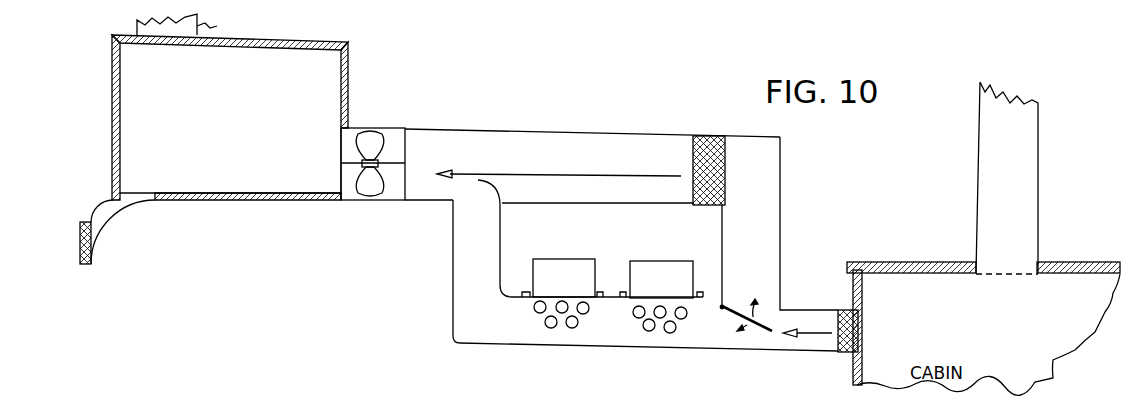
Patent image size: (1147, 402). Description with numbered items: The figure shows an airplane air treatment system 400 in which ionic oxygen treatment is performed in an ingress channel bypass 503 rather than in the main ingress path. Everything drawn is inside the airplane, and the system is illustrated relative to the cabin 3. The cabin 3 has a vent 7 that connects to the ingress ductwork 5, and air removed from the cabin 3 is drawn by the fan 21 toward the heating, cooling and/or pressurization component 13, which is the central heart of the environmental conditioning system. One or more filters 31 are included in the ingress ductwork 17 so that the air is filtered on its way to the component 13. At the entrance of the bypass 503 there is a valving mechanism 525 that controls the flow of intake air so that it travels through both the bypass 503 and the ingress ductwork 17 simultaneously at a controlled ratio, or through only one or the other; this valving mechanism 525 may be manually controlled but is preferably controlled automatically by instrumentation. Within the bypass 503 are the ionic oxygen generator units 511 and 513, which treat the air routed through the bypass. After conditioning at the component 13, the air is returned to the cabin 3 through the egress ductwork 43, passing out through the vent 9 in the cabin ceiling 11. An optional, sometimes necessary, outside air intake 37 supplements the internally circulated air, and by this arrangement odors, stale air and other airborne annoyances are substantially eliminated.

The cabin 3 is at (847, 372).
The ingress ductwork 5 is at (817, 309).
The vent 7 is at (860, 338).
The vent 9 is at (994, 276).
The cabin ceiling 11 is at (914, 277).
The heating, cooling and/or pressurization component(s) 13 is at (283, 205).
The ingress ductwork 17 is at (537, 129).
The fan(s) 21 is at (367, 127).
The filters 31 is at (727, 177).
The outside air intake 37 is at (78, 245).
The egress ductwork 43 is at (1035, 124).
The air handling system 400 is at (340, 291).
The ingress channel bypass 503 is at (453, 302).
The ionic oxygen generator unit 511 is at (590, 260).
The ionic oxygen generator unit 513 is at (693, 258).
The valving mechanism 525 is at (730, 307).